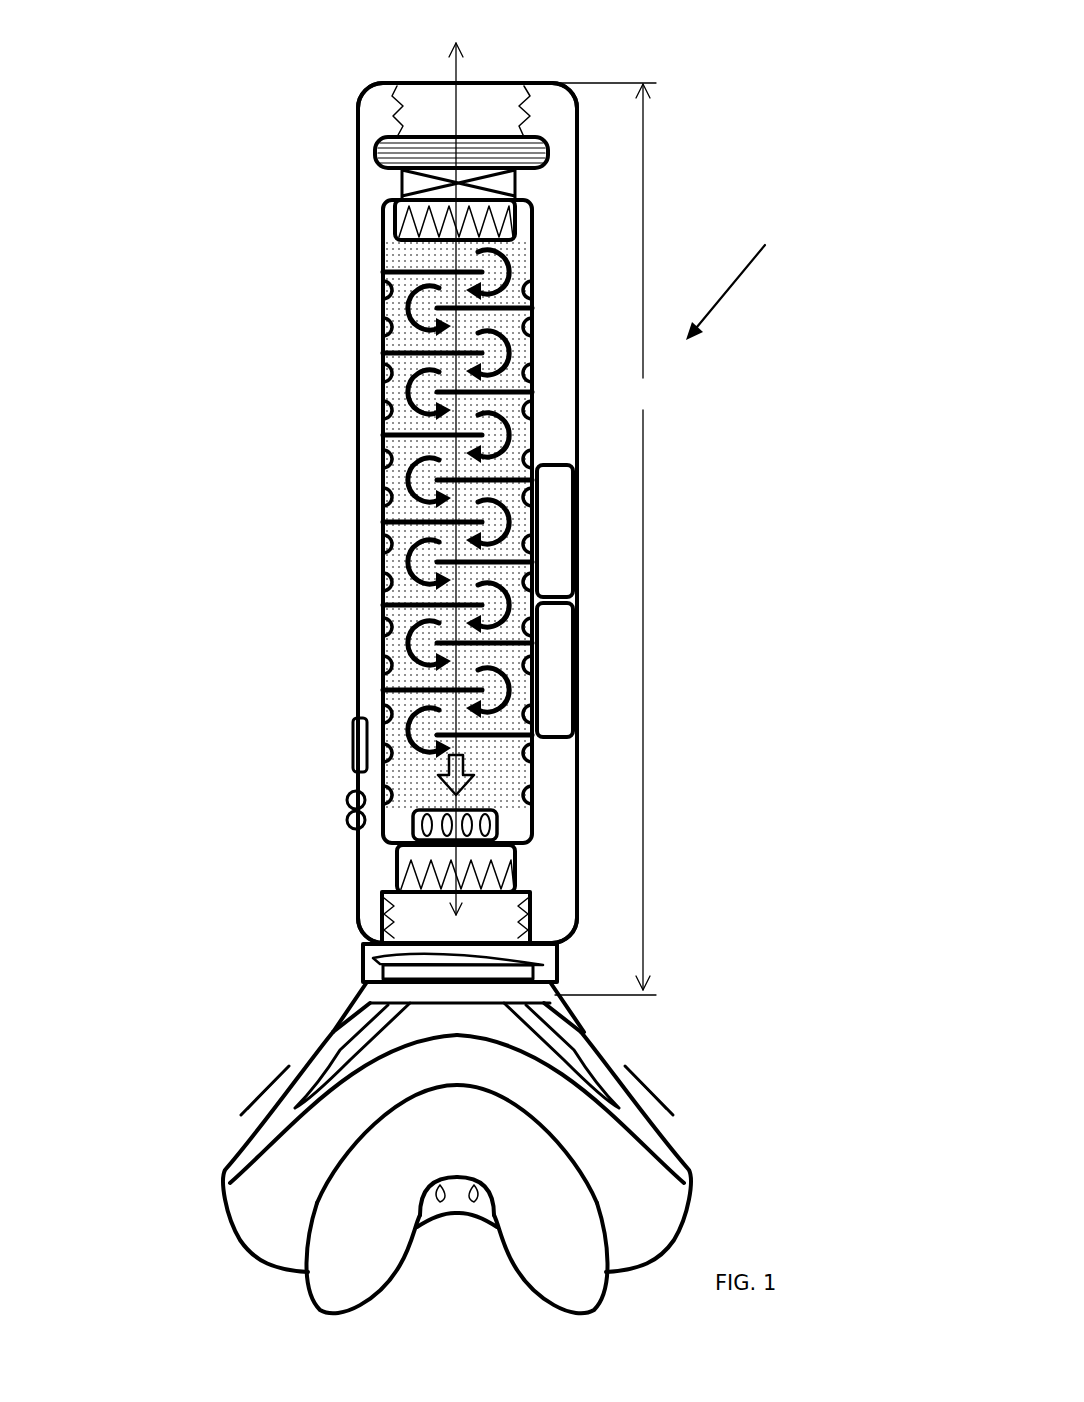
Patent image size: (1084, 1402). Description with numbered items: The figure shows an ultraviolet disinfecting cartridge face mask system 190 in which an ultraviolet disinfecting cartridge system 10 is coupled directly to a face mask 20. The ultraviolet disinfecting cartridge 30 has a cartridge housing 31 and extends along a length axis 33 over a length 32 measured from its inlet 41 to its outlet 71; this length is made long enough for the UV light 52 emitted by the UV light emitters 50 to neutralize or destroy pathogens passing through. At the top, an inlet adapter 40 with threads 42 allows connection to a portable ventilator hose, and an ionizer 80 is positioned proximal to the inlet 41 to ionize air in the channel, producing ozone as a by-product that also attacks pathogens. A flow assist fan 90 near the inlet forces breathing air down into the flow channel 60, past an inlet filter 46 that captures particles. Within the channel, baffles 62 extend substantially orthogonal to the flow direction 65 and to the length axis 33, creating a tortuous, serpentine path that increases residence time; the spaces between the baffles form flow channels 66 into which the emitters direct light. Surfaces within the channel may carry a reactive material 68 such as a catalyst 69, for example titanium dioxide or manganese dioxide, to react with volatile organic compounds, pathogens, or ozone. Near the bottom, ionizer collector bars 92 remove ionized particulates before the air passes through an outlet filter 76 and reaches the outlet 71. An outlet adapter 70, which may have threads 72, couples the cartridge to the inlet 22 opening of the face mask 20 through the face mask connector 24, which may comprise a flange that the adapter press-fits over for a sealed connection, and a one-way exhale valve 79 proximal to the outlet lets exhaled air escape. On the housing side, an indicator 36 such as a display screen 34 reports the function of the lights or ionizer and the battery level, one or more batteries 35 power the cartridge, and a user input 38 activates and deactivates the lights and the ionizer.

The ultraviolet disinfecting cartridge system 10 is at (357, 516).
The face mask 20 is at (625, 1060).
The inlet 22 is at (490, 950).
The face mask connector 24 is at (540, 965).
The ultraviolet disinfecting cartridge 30 is at (372, 383).
The cartridge housing 31 is at (372, 690).
The length 32 is at (602, 539).
The length axis 33 is at (540, 612).
The display screen 34 is at (358, 742).
The batteries 35 is at (555, 508).
The indicator 36 is at (355, 800).
The user input 38 is at (352, 825).
The inlet adapter 40 is at (362, 100).
The inlet 41 is at (440, 82).
The threads 42 is at (392, 92).
The inlet filter 46 is at (405, 212).
The UV light emitters 50 is at (382, 322).
The UV light 52 is at (395, 300).
The flow channel 60 is at (383, 452).
The baffles 62 is at (408, 262).
The flow direction 65 is at (470, 775).
The flow channels 66 is at (457, 330).
The reactive material 68 is at (383, 555).
The catalyst 69 is at (383, 607).
The outlet adapter 70 is at (376, 920).
The outlet 71 is at (375, 985).
The threads 72 is at (383, 908).
The outlet filter 76 is at (397, 868).
The one-way exhale valve 79 is at (362, 946).
The ionizer 80 is at (535, 147).
The flow assist fan 90 is at (413, 183).
The ionizer collector bars 92 is at (473, 803).
The ultraviolet disinfecting cartridge face mask system 190 is at (744, 281).